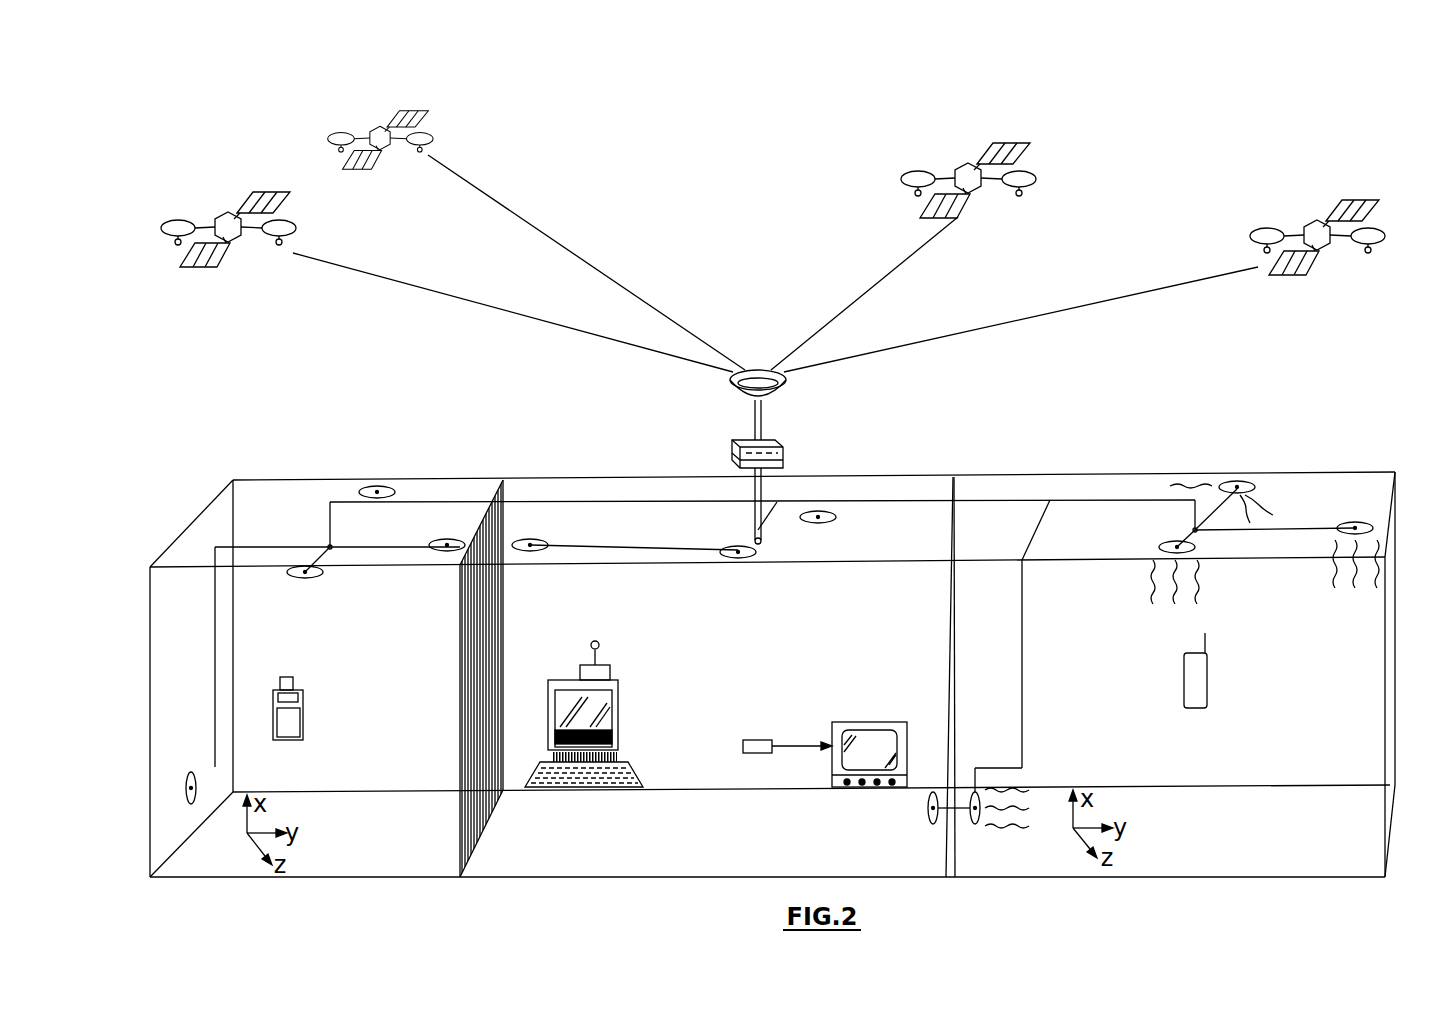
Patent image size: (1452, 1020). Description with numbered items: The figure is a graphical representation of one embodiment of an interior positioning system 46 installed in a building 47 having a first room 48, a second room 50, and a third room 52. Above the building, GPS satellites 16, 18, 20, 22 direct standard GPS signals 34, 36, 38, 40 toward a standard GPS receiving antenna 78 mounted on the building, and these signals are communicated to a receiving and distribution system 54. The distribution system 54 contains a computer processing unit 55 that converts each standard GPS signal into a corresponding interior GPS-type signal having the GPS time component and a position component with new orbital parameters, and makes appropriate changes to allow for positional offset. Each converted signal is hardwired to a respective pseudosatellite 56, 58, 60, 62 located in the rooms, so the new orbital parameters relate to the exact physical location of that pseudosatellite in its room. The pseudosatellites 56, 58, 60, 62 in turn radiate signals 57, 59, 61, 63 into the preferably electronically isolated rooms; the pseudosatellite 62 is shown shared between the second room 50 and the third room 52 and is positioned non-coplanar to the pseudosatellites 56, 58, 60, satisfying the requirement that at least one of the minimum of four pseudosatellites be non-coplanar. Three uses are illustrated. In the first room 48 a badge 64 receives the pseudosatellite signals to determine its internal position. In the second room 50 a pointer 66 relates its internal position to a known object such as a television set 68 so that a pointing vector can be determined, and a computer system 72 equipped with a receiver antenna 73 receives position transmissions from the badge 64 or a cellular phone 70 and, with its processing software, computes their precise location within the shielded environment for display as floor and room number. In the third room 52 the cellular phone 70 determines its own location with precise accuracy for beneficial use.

The GPS satellite 16 is at (1398, 206).
The GPS satellite 18 is at (1054, 149).
The GPS satellite 20 is at (447, 117).
The GPS satellite 22 is at (217, 202).
The GPS signal 34 is at (1108, 300).
The GPS signal 36 is at (886, 274).
The GPS signal 38 is at (507, 207).
The GPS signal 40 is at (372, 275).
The interior positioning system 46 is at (821, 142).
The building 47 is at (1278, 442).
The first room 48 is at (310, 880).
The second room 50 is at (735, 878).
The third room 52 is at (1205, 878).
The receiving and distribution system 54 is at (783, 449).
The computer processing unit 55 is at (783, 461).
The pseudosatellite 56 is at (377, 490).
The signal 57 is at (1265, 500).
The pseudosatellite 58 is at (447, 550).
The signal 59 is at (1345, 588).
The pseudosatellite 60 is at (306, 575).
The signal 61 is at (1200, 592).
The pseudosatellite 62 is at (187, 802).
The signal 63 is at (1010, 830).
The badge 64 is at (303, 700).
The pointer 66 is at (745, 752).
The television set 68 is at (862, 730).
The cellular phone 70 is at (1207, 683).
The computer system 72 is at (578, 695).
The receiver antenna 73 is at (603, 665).
The GPS receiving antenna 78 is at (730, 388).